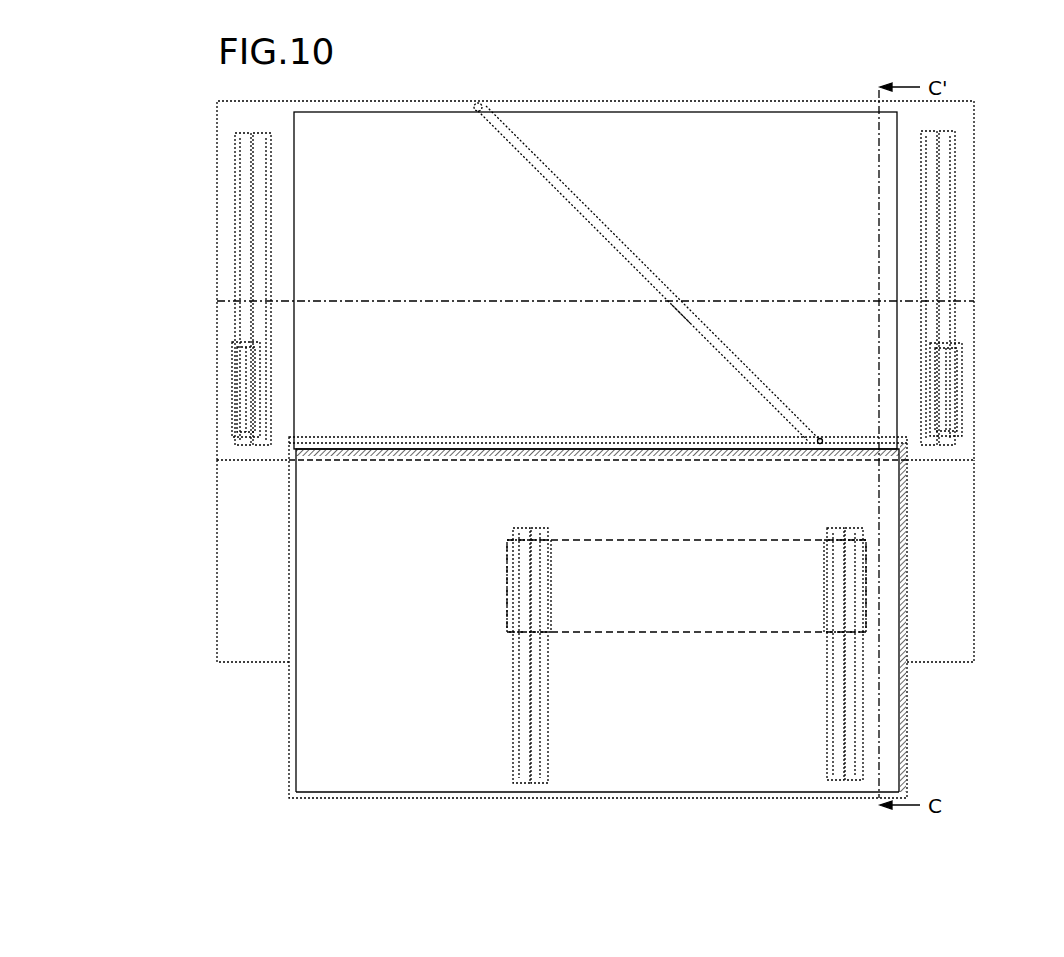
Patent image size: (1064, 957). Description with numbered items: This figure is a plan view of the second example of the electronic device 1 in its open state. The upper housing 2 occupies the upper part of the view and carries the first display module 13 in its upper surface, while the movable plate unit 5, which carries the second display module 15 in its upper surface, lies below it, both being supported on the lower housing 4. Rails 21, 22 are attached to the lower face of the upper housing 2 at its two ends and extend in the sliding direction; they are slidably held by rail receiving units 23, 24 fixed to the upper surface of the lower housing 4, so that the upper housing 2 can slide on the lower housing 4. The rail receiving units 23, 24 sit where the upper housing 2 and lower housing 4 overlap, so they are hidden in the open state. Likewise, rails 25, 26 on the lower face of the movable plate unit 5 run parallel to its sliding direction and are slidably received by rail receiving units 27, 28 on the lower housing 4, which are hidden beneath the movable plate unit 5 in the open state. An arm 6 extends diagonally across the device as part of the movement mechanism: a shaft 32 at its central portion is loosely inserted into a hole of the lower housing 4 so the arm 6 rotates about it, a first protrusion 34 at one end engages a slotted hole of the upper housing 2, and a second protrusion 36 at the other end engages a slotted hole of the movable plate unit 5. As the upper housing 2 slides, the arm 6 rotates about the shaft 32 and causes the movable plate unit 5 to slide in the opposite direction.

The electronic device 1 is at (648, 90).
The upper housing 2 is at (976, 112).
The lower housing 4 is at (975, 590).
The movable plate unit 5 is at (908, 724).
The arm 6 is at (519, 140).
The first display module 13 is at (798, 112).
The second display module 15 is at (370, 799).
The rail 21 is at (235, 180).
The rail 22 is at (957, 180).
The rail receiving unit 23 is at (232, 375).
The rail receiving unit 24 is at (962, 376).
The rail 25 is at (535, 785).
The rail 26 is at (838, 782).
The rail receiving unit 27 is at (507, 570).
The rail receiving unit 28 is at (830, 552).
The shaft 32 is at (680, 306).
The first protrusion 34 is at (474, 101).
The second protrusion 36 is at (822, 438).